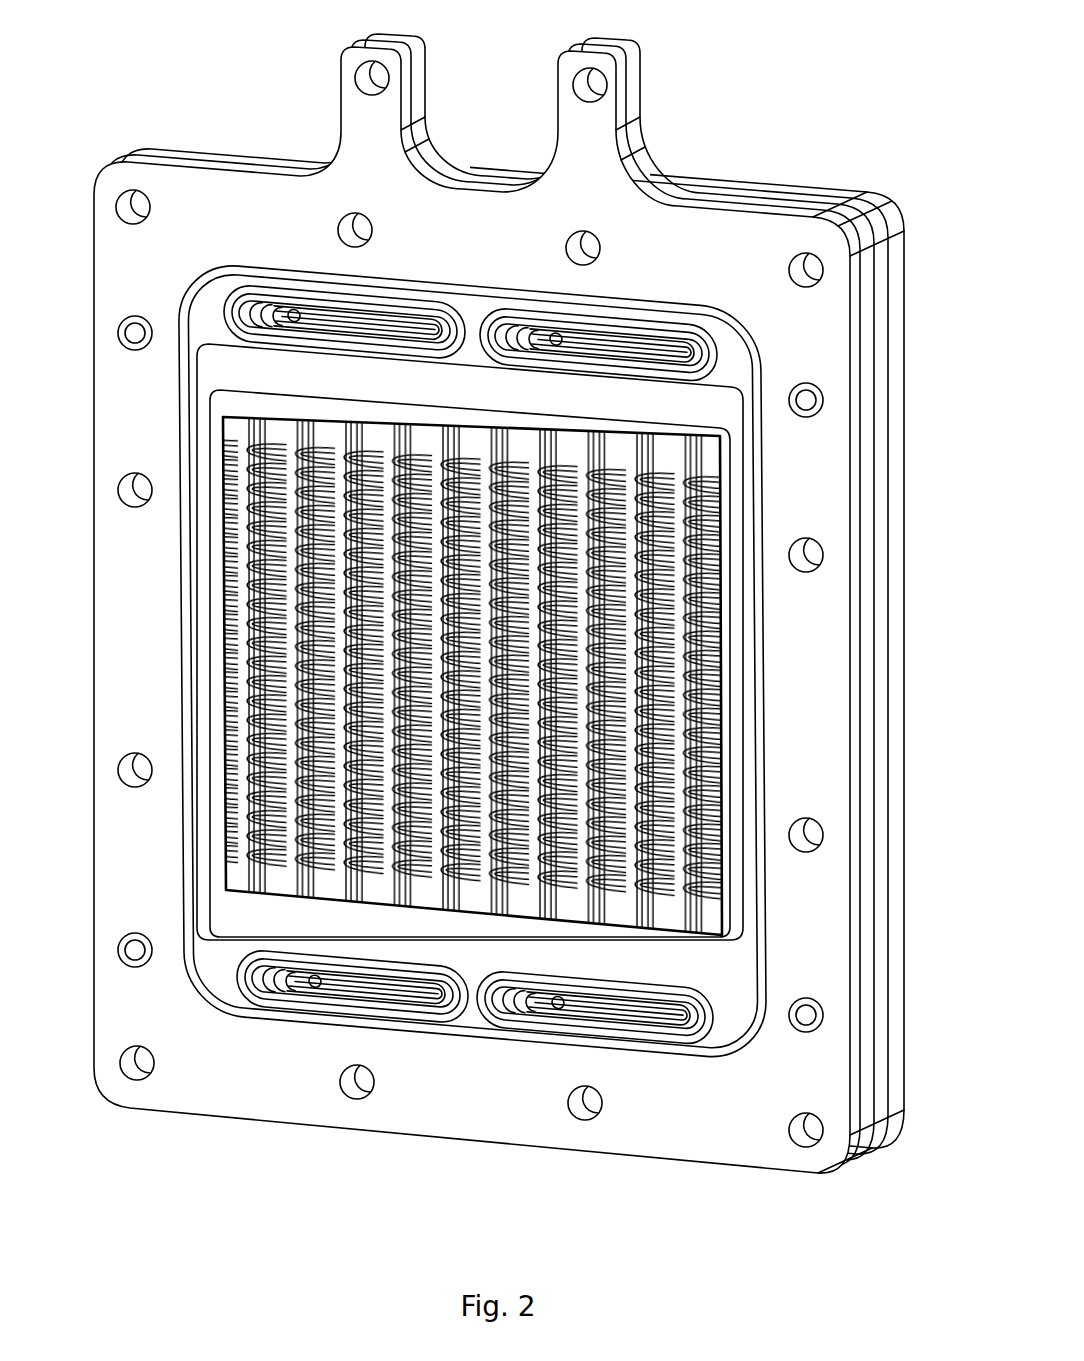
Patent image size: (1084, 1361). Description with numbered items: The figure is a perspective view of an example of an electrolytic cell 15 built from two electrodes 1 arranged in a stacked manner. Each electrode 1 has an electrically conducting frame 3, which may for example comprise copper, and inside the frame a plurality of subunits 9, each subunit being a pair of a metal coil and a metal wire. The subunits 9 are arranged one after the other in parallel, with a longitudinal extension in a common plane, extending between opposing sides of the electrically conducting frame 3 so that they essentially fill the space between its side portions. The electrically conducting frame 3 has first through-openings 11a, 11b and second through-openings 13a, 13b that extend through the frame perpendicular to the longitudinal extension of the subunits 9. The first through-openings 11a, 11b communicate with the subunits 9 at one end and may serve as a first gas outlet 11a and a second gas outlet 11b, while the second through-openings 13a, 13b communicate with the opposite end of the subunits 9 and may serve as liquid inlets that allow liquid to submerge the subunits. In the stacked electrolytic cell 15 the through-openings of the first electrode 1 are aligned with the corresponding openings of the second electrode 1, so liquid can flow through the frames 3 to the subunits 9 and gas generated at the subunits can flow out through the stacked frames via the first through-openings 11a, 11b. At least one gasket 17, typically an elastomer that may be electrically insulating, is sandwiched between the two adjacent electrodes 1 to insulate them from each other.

The electrolytic cell 15 is at (839, 24).
The electrode 1 is at (90, 152).
The electrically conducting frame 3 is at (210, 206).
The gasket 17 is at (877, 378).
The subunit 9 is at (243, 862).
The first gas outlet 11a is at (293, 314).
The second gas outlet 11b is at (618, 343).
The second through-opening 13a is at (320, 986).
The second through-opening 13b is at (560, 1002).